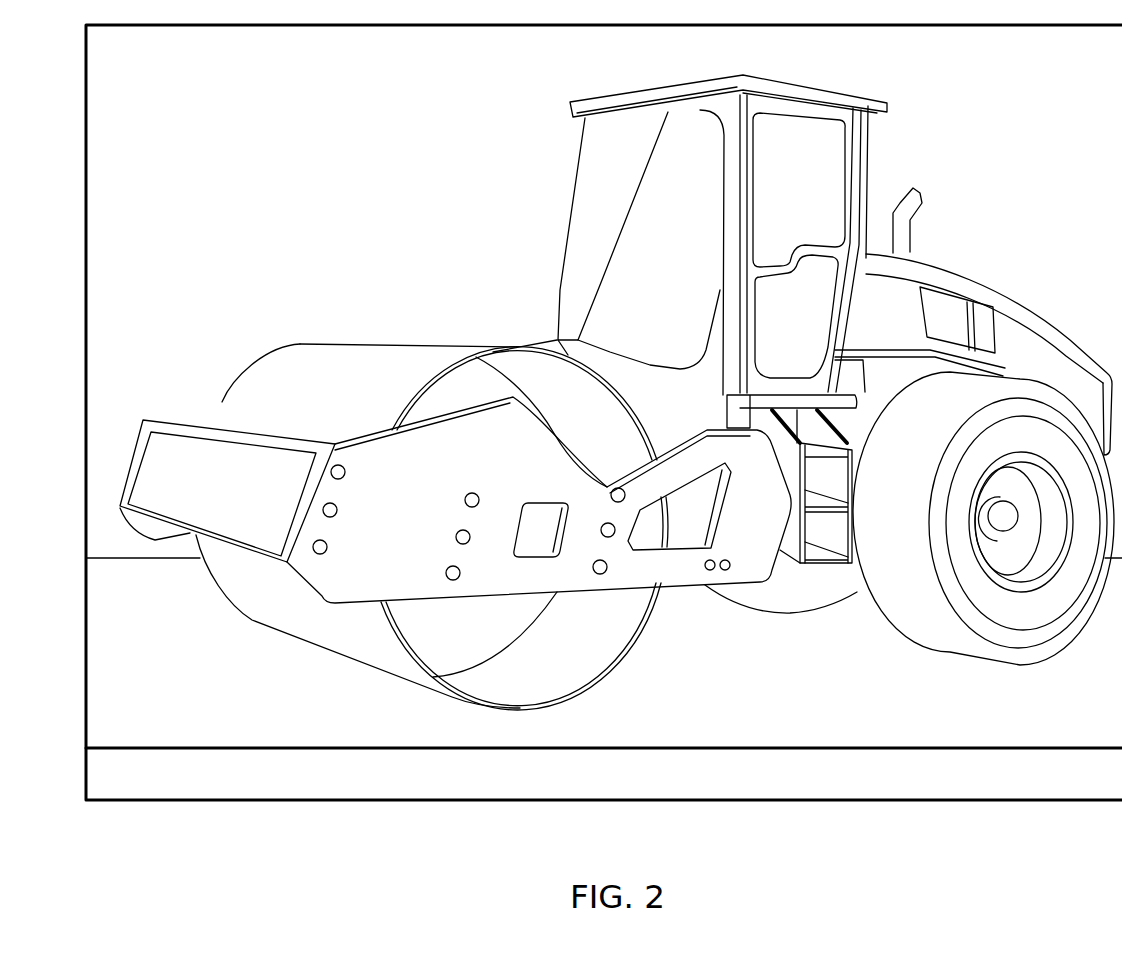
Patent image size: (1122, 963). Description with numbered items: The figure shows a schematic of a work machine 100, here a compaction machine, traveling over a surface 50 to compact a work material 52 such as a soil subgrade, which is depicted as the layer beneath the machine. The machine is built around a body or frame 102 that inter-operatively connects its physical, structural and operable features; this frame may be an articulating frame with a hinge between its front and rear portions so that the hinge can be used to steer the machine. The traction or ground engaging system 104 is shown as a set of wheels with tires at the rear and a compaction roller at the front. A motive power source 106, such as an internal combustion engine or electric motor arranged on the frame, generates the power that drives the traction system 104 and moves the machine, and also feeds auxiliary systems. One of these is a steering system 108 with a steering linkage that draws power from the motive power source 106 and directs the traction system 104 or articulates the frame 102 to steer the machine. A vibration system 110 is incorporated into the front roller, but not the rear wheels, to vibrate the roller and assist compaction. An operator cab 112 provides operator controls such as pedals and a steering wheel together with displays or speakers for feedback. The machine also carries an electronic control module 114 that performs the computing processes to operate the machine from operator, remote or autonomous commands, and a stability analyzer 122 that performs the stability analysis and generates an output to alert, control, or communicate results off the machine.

The surface 50 is at (778, 710).
The work material 52 is at (830, 780).
The work machine 100 is at (275, 157).
The frame 102 is at (873, 392).
The traction system 104 is at (1033, 611).
The motive power source 106 is at (1000, 287).
The steering system 108 is at (803, 585).
The vibration system 110 is at (554, 405).
The cab 112 is at (805, 90).
The electronic control module 114 is at (588, 252).
The stability analyzer 122 is at (589, 255).